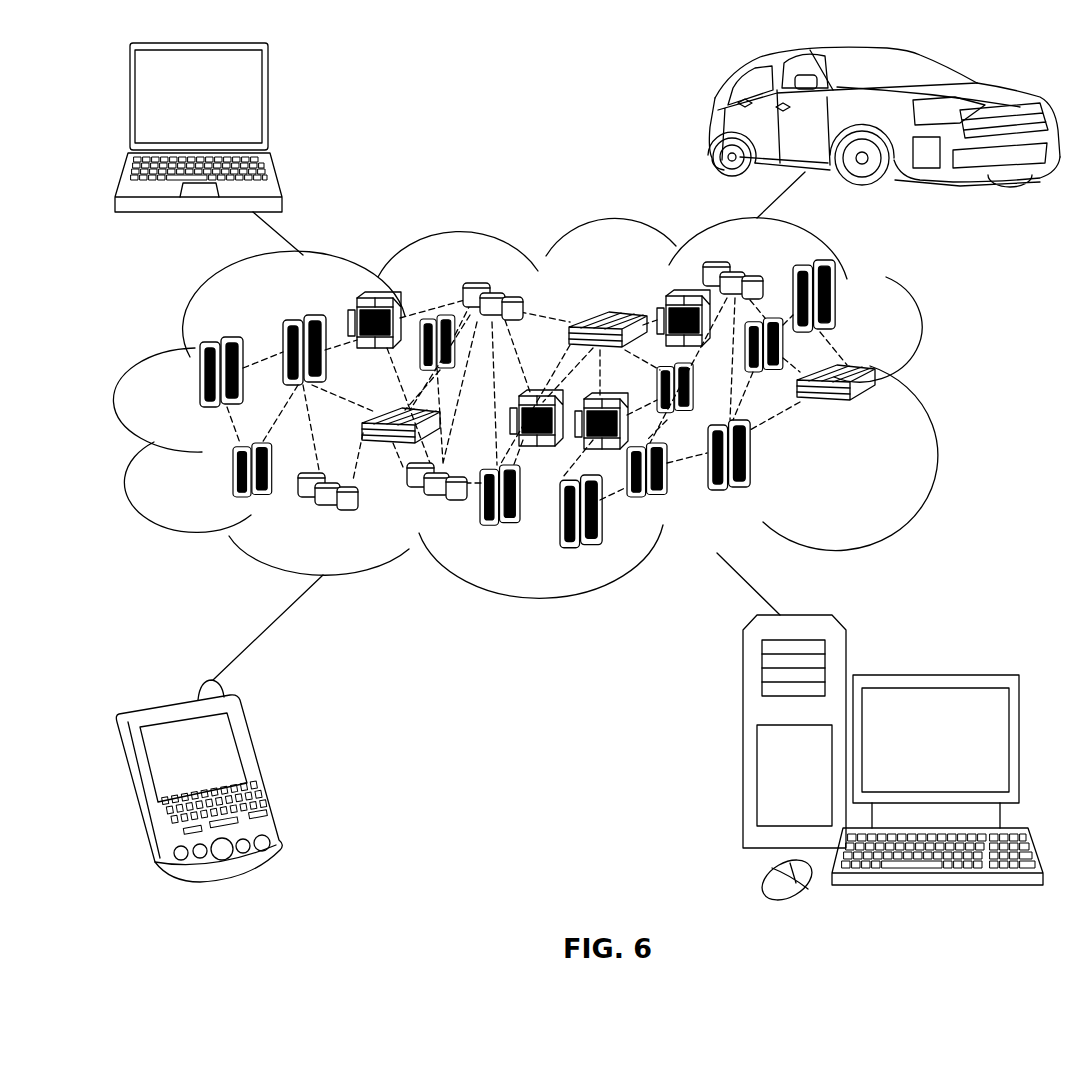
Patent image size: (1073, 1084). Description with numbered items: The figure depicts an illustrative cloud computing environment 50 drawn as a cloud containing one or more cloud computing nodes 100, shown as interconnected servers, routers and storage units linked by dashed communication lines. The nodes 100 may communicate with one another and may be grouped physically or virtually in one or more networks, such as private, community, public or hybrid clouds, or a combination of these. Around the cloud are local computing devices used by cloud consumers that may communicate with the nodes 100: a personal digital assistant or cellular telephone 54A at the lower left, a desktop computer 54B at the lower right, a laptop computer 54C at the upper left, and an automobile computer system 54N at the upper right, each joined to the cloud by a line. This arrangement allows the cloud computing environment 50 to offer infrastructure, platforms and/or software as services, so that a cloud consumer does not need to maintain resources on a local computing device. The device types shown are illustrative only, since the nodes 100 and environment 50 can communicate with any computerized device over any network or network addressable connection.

The cloud computing environment 50 is at (935, 382).
The cloud computing nodes 100 is at (883, 412).
The personal digital assistant (PDA) or cellular telephone 54A is at (262, 770).
The desktop computer 54B is at (933, 675).
The laptop computer 54C is at (270, 108).
The automobile computer system 54N is at (712, 120).